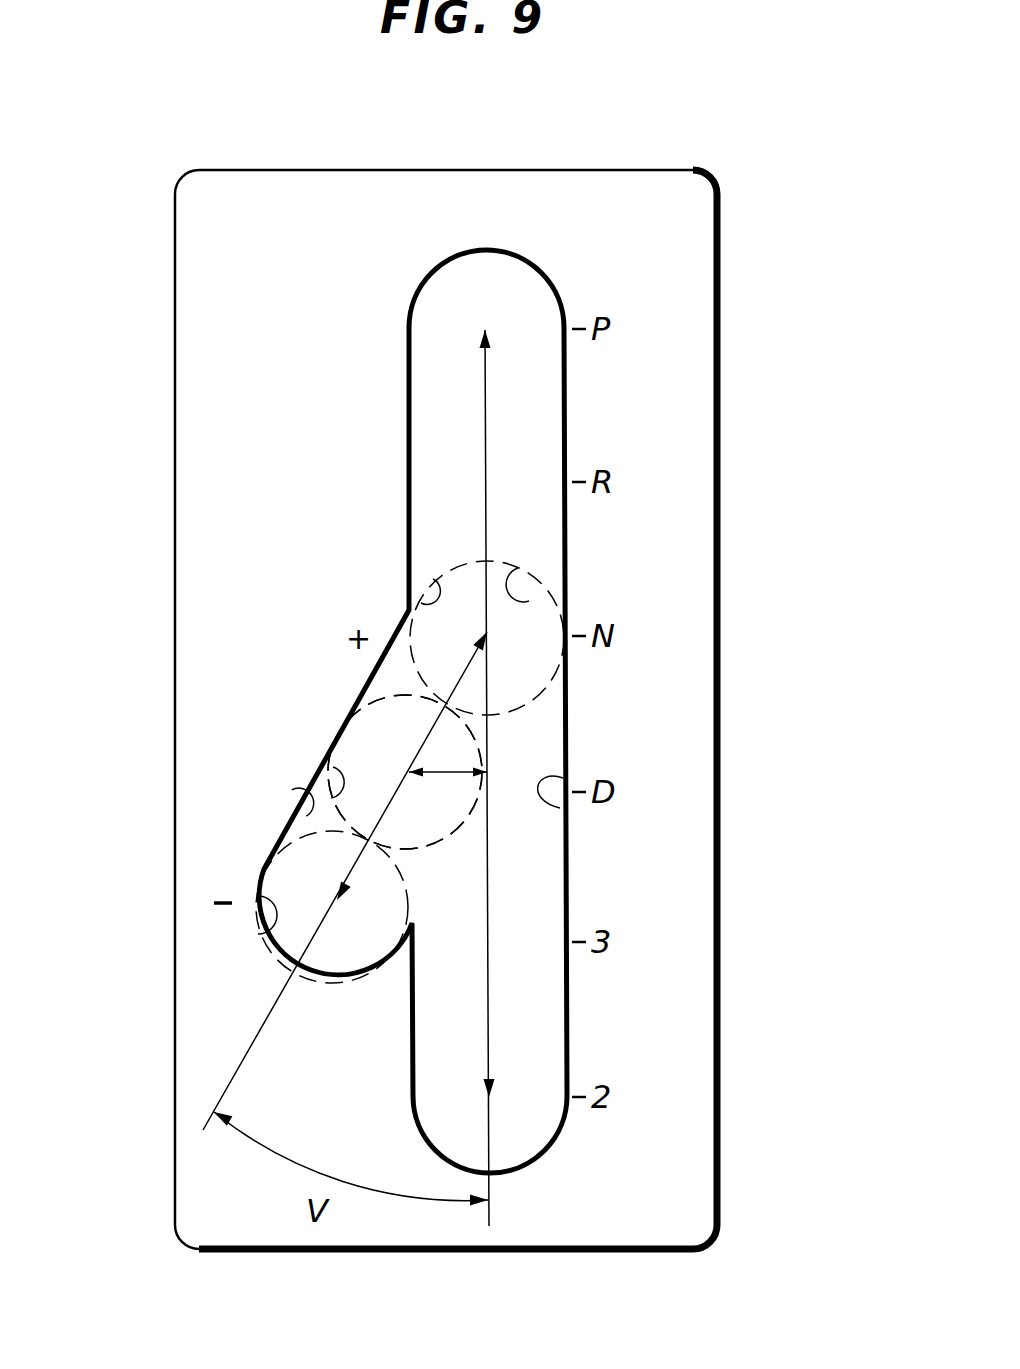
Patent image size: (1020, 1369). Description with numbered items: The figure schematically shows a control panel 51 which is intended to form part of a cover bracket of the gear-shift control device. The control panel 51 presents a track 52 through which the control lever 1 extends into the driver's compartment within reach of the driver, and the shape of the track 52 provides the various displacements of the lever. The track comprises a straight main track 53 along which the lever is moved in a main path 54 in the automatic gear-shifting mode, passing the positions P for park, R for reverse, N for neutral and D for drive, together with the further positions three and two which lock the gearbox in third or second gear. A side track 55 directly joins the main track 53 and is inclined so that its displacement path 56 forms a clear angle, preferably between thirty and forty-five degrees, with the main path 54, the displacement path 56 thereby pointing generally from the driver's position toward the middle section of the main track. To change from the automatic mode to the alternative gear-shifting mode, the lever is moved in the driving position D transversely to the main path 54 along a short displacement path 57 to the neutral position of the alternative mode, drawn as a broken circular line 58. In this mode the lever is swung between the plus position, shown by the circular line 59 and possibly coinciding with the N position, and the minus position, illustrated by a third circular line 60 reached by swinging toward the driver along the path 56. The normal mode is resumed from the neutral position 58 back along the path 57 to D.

The control lever 1 is at (548, 603).
The control panel 51 is at (730, 1056).
The track 52 is at (558, 408).
The main track 53 is at (560, 808).
The main path 54 is at (490, 937).
The side track 55 is at (290, 817).
The displacement path of the side track 56 is at (432, 728).
The short displacement path 57 is at (447, 773).
The neutral position of the alternative gear-shifting mode 58 is at (322, 755).
The + position 59 is at (420, 608).
The - position 60 is at (257, 931).